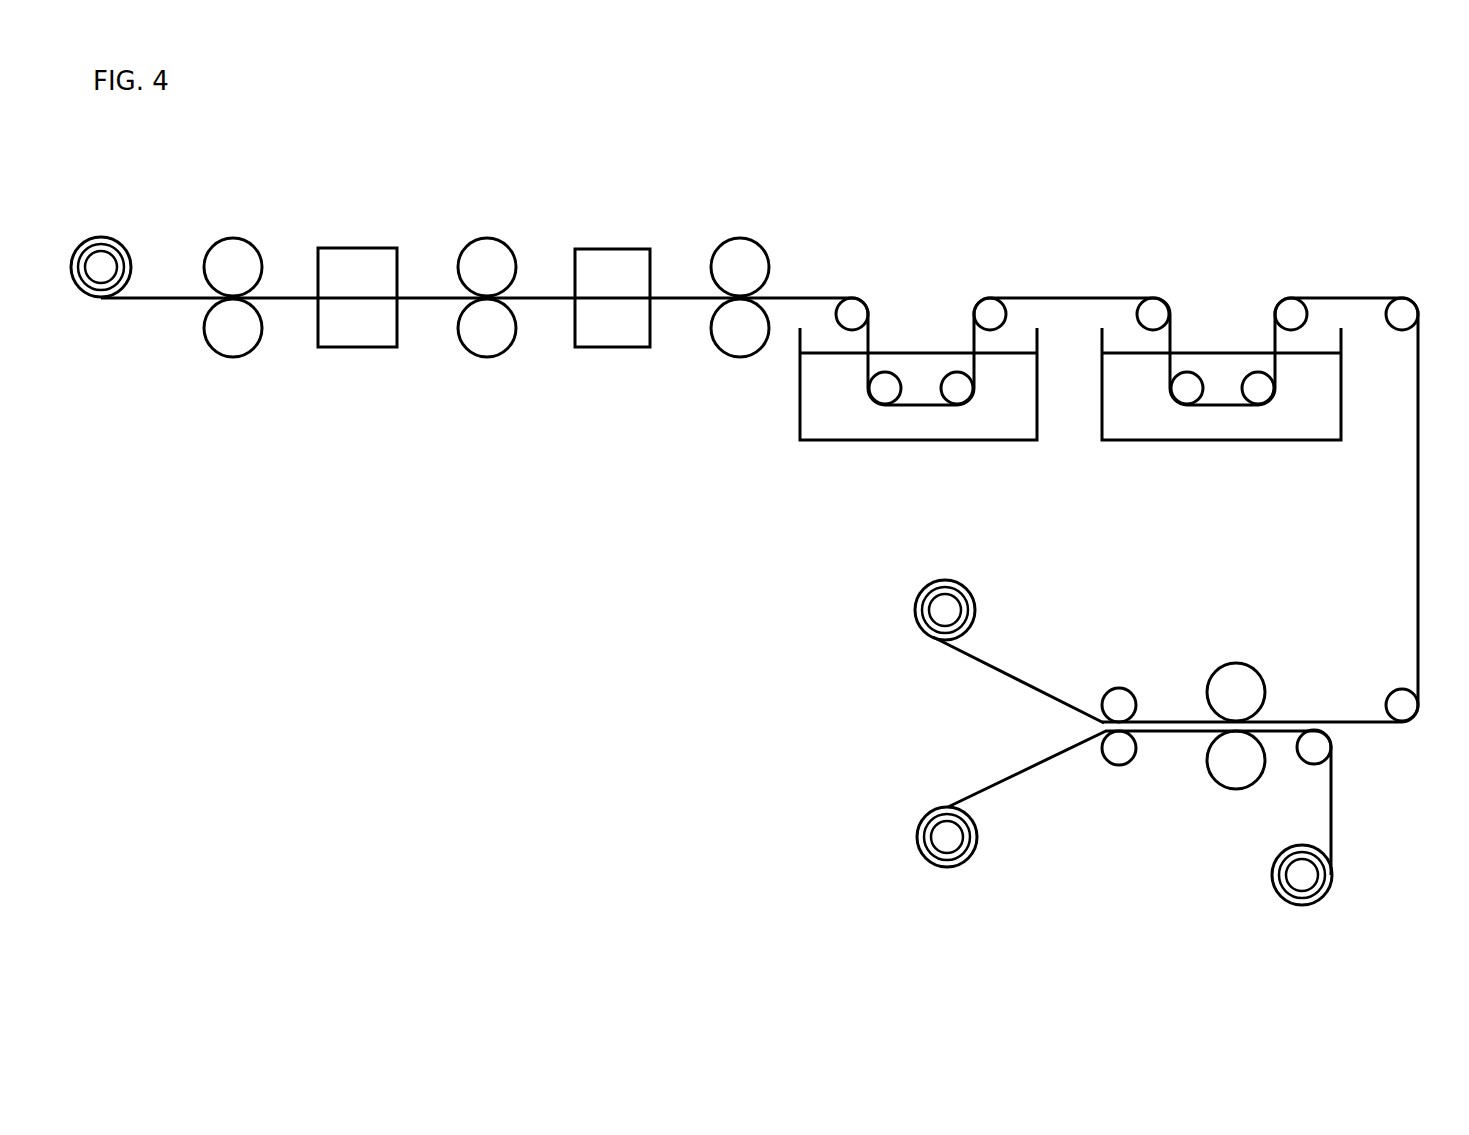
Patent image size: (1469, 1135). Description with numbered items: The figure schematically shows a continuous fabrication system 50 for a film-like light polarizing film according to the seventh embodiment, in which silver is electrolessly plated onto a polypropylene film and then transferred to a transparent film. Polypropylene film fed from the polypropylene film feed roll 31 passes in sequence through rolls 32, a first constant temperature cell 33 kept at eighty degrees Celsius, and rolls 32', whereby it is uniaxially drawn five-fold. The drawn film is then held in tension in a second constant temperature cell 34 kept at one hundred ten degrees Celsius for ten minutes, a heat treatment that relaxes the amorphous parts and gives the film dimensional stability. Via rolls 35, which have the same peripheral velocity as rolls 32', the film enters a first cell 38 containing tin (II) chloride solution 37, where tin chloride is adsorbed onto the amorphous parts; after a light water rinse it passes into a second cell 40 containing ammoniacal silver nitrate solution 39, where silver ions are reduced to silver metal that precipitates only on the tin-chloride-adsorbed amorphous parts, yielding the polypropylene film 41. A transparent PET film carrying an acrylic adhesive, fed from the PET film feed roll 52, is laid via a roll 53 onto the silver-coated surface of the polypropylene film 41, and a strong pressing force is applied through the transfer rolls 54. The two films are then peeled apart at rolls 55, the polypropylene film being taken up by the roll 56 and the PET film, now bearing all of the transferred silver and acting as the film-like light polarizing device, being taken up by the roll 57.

The continuous fabrication system 50 is at (606, 146).
The polypropylene film feed roll 31 is at (100, 268).
The rolls 32 is at (233, 262).
The rolls 32' is at (487, 264).
The first constant temperature cell 33 is at (357, 338).
The second constant temperature cell 34 is at (612, 336).
The rolls 35 is at (741, 260).
The tin (II) chloride solution 37 is at (920, 429).
The first cell 38 is at (1005, 441).
The ammoniacal silver nitrate solution 39 is at (1140, 421).
The second cell 40 is at (1210, 441).
The polypropylene film 41 is at (1417, 572).
The PET film feed roll 52 is at (1310, 872).
The roll 53 is at (1314, 744).
The transfer rolls 54 is at (1238, 690).
The rolls 55 is at (1122, 703).
The roll 56 is at (940, 610).
The roll 57 is at (945, 838).